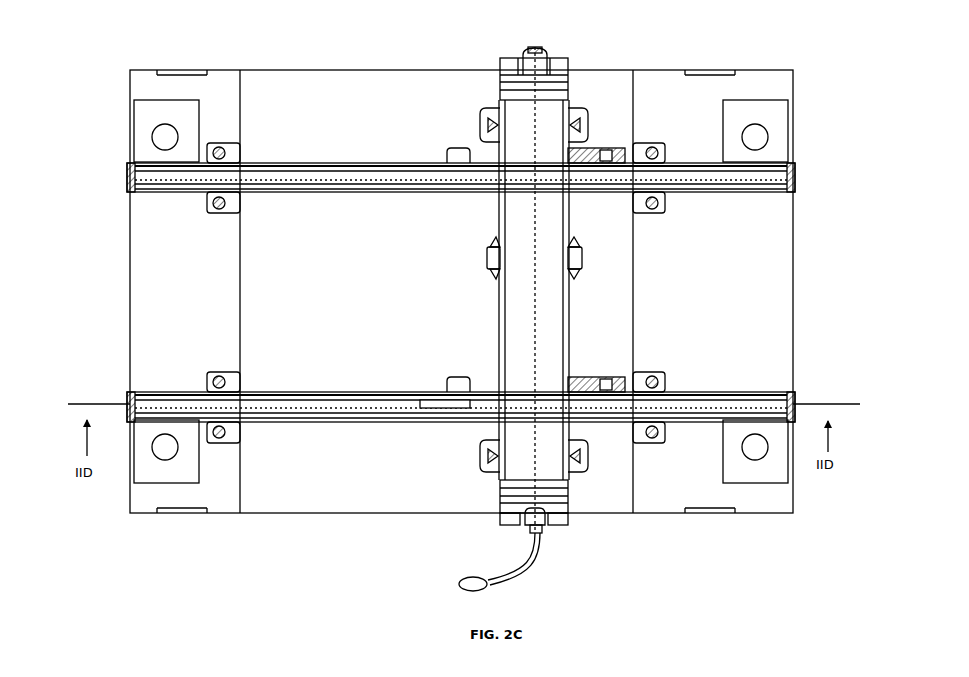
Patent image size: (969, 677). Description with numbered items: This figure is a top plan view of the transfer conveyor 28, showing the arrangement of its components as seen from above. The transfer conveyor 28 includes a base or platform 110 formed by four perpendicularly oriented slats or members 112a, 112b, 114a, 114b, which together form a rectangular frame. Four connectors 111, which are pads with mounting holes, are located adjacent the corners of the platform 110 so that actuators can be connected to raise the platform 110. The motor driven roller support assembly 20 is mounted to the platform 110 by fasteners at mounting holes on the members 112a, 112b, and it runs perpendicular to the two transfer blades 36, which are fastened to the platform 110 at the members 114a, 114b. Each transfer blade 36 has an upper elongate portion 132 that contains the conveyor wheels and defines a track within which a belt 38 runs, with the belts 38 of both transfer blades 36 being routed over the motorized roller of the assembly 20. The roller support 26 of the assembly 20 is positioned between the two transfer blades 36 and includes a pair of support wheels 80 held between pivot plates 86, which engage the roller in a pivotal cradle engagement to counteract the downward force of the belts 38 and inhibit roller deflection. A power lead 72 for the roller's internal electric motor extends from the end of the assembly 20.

The motor driven roller support assembly 20 is at (490, 328).
The roller support 26 is at (578, 282).
The transfer conveyor 28 is at (174, 531).
The transfer blades 36 is at (155, 192).
The belt 38 is at (302, 178).
The power lead 72 is at (530, 570).
The support wheels 80 is at (487, 258).
The pivot plates 86 is at (492, 274).
The platform 110 is at (145, 335).
The connectors 111 is at (145, 118).
The member 112a is at (355, 90).
The member 112b is at (320, 485).
The member 114a is at (143, 273).
The member 114b is at (765, 263).
The upper elongate portion 132 is at (330, 192).